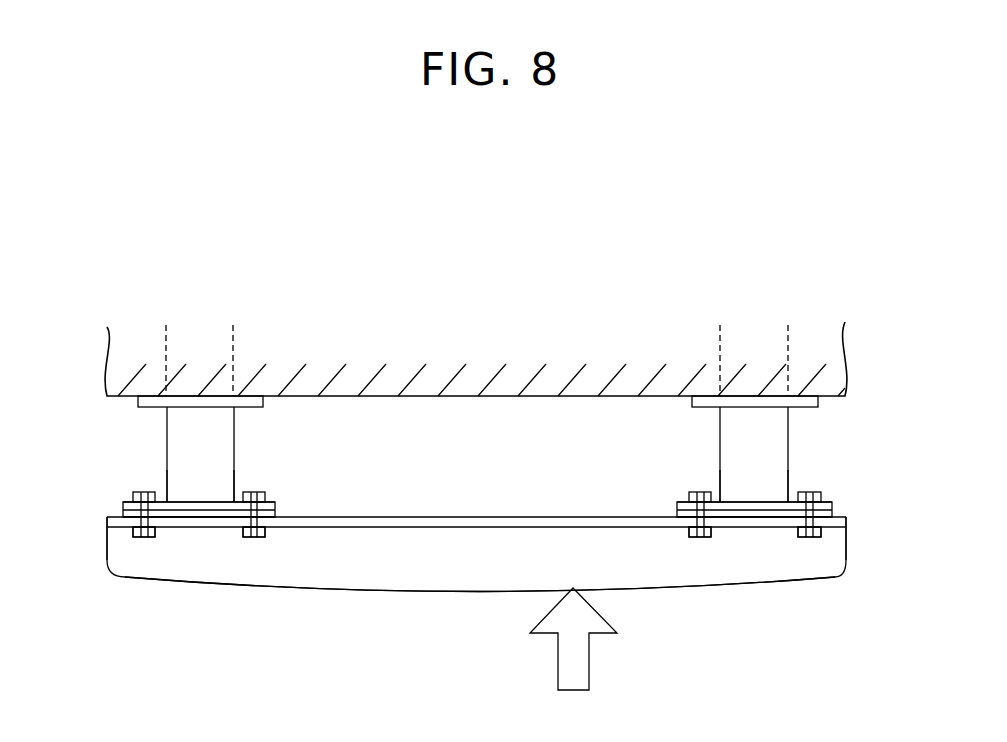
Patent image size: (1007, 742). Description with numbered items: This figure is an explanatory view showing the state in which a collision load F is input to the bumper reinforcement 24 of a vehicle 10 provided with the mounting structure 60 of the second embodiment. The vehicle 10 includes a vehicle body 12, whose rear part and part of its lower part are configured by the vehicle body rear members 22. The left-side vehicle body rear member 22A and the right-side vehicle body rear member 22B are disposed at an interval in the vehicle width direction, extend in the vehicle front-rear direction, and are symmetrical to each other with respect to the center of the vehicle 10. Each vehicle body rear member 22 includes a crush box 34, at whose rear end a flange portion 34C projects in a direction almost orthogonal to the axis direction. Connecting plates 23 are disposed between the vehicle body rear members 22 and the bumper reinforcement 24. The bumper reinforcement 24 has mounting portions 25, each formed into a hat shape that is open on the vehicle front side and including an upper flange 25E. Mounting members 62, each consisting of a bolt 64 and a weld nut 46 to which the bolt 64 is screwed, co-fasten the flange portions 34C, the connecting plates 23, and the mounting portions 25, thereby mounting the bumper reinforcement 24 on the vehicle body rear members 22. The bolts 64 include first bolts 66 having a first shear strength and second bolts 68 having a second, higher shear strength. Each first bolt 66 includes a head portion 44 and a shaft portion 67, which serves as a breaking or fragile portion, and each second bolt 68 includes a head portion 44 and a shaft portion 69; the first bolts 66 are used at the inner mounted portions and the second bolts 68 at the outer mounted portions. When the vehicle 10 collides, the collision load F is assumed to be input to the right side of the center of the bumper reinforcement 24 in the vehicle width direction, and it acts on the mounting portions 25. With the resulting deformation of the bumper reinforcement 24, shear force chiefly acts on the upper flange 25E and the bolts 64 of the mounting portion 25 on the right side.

The vehicle 10 is at (797, 248).
The vehicle body 12 is at (480, 398).
The vehicle body rear members 22 is at (546, 334).
The vehicle body rear member 22A is at (233, 348).
The vehicle body rear member 22B is at (787, 342).
The connecting plate 23 is at (275, 513).
The bumper reinforcement 24 is at (448, 592).
The mounting portion 25 is at (202, 528).
The upper flange 25E is at (218, 523).
The crush box 34 is at (237, 440).
The flange portion 34C is at (203, 502).
The head portion 44 is at (125, 542).
The weld nut 46 is at (140, 492).
The mounting structure 60 is at (293, 498).
The mounting member 62 is at (107, 548).
The bolt 64 is at (518, 588).
The first bolt 66 is at (253, 539).
The shaft portion 67 is at (282, 523).
The second bolt 68 is at (145, 538).
The shaft portion 69 is at (133, 500).
The collision load F is at (589, 673).